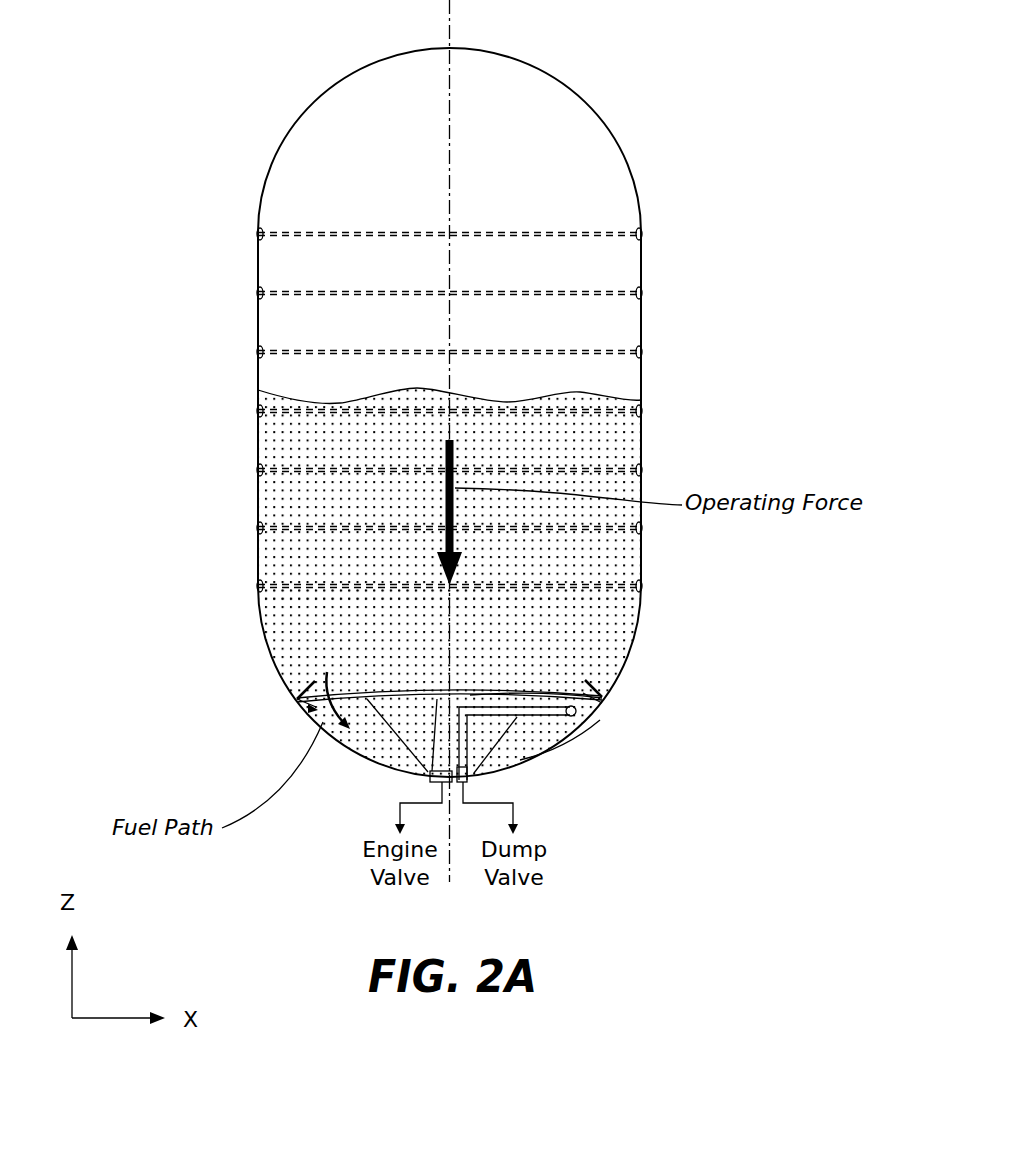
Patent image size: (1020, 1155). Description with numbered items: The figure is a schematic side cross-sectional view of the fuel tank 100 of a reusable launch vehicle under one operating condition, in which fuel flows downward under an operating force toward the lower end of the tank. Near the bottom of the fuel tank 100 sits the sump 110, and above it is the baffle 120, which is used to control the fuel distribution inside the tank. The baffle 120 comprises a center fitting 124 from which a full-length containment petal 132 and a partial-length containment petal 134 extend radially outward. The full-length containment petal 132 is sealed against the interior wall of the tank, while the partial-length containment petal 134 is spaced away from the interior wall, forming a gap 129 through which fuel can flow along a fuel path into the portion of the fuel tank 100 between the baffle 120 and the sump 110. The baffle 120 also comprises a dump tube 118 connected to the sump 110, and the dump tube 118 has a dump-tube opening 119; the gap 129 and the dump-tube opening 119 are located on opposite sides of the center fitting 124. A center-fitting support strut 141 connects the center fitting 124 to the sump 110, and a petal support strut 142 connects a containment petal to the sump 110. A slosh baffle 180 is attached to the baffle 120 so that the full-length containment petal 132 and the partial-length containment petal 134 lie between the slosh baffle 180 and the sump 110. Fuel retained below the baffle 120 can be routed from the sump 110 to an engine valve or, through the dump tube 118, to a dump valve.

The fuel tank 100 is at (582, 77).
The sump 110 is at (517, 803).
The dump tube 118 is at (568, 736).
The dump-tube opening 119 is at (581, 713).
The baffle 120 is at (510, 695).
The center fitting 124 is at (445, 690).
The gap 129 is at (303, 712).
The full-length containment petal 132 is at (560, 693).
The partial-length containment petal 134 is at (352, 690).
The center-fitting support strut 141 is at (428, 760).
The petal support strut 142 is at (400, 738).
The slosh baffle 180 is at (600, 689).